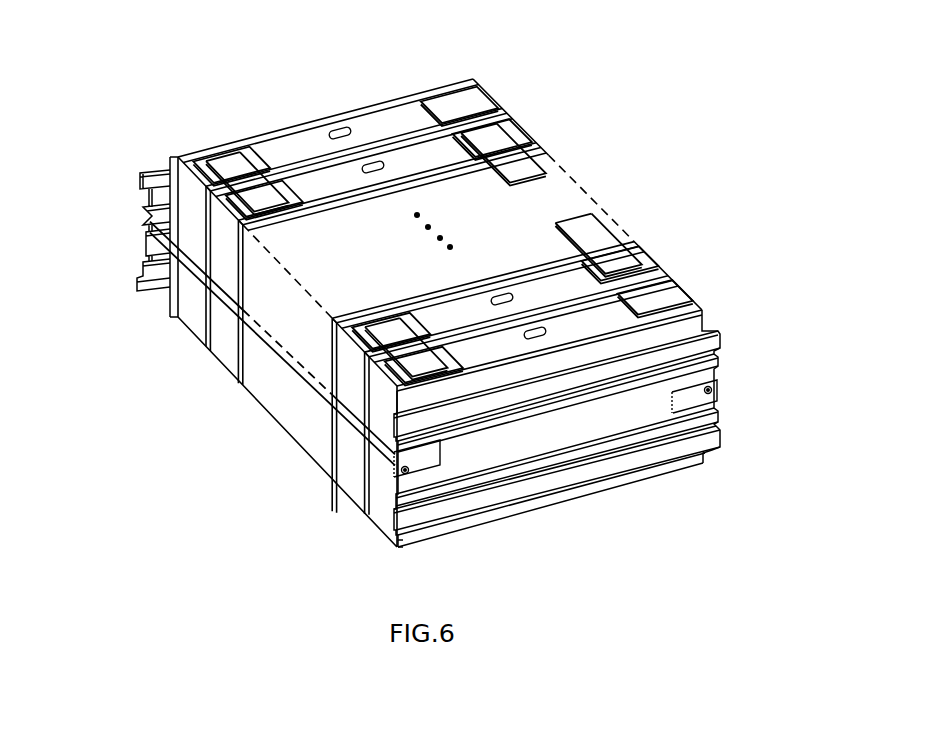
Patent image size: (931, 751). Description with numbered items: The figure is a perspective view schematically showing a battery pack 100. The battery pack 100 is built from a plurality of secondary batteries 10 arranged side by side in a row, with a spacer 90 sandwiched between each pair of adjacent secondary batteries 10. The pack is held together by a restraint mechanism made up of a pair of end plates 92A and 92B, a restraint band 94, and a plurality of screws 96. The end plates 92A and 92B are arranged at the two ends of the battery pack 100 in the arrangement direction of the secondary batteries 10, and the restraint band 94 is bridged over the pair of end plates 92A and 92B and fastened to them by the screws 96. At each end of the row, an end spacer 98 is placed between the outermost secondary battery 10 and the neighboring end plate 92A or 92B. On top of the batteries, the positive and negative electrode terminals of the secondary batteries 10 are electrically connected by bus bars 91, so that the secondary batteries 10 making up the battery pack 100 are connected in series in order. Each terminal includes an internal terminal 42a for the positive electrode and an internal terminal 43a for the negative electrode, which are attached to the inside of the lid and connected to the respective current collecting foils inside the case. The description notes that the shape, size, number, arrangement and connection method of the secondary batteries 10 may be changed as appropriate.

The battery pack 100 is at (658, 66).
The secondary battery 10 is at (413, 170).
The internal terminal 42a is at (196, 162).
The internal terminal 43a is at (467, 97).
The bus bar 91 is at (228, 160).
The spacer 90 is at (238, 376).
The end plate 92A is at (722, 333).
The end plate 92B is at (148, 179).
The restraint band 94 is at (335, 400).
The screw 96 is at (720, 390).
The end spacer 98 is at (168, 300).